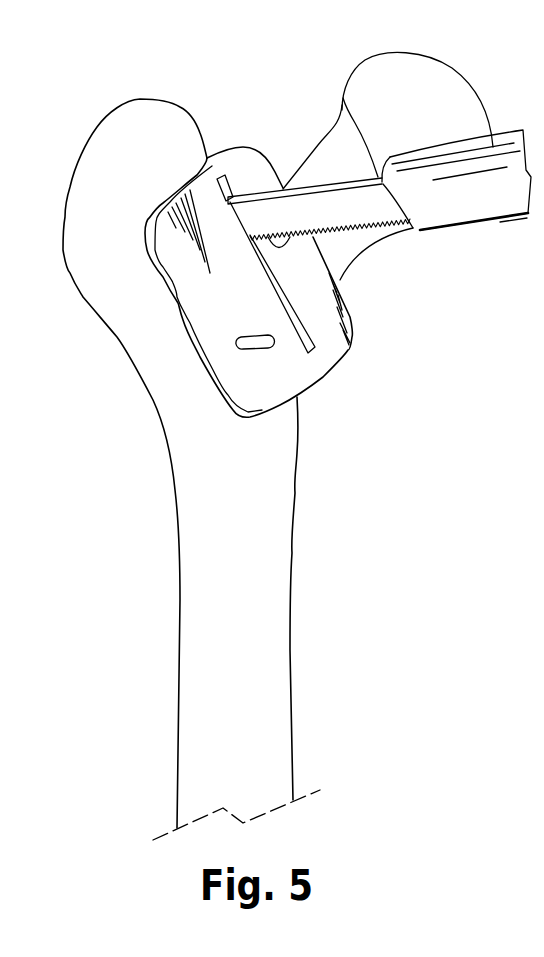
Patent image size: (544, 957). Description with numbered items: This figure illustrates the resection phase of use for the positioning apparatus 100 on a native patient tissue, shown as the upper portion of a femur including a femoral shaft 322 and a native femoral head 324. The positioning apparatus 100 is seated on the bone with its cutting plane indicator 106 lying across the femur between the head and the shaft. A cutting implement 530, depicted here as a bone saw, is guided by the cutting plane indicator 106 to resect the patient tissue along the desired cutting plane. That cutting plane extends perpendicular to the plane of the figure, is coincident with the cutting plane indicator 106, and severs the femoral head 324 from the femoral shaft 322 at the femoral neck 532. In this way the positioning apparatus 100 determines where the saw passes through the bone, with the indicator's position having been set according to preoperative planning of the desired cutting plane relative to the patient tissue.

The positioning apparatus 100 is at (238, 115).
The cutting plane indicator 106 is at (305, 338).
The femoral shaft 322 is at (310, 507).
The native femoral head 324 is at (395, 77).
The cutting implement 530 is at (467, 200).
The femoral neck 532 is at (307, 177).